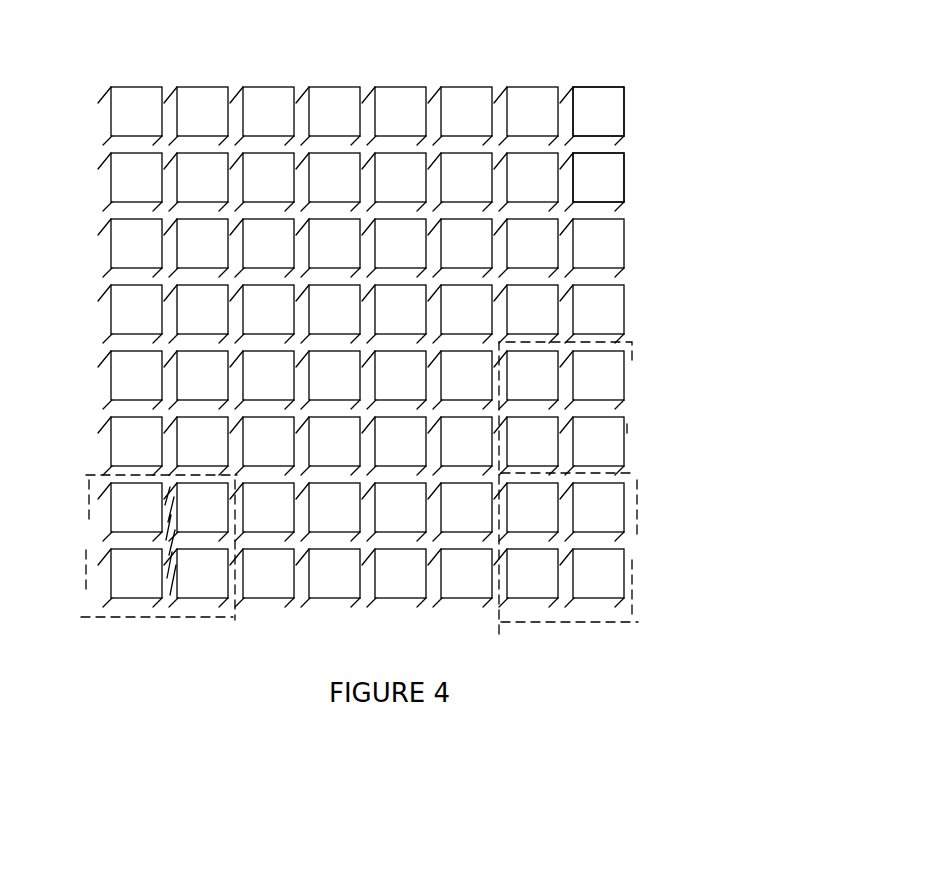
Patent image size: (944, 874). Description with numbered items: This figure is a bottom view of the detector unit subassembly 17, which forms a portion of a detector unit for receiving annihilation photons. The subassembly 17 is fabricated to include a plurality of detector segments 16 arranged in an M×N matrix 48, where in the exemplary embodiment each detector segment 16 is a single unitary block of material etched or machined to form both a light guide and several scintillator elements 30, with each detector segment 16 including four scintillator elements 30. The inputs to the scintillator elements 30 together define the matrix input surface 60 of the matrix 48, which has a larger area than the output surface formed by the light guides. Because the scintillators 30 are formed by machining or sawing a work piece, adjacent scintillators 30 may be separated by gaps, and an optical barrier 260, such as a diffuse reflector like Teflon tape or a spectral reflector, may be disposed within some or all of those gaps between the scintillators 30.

The detector unit subassembly 17 is at (443, 383).
The scintillator element 30 is at (612, 584).
The matrix input surface 60 is at (583, 90).
The M×N matrix 48 is at (667, 199).
The detector segment 16 is at (628, 404).
The optical barrier 260 is at (171, 595).